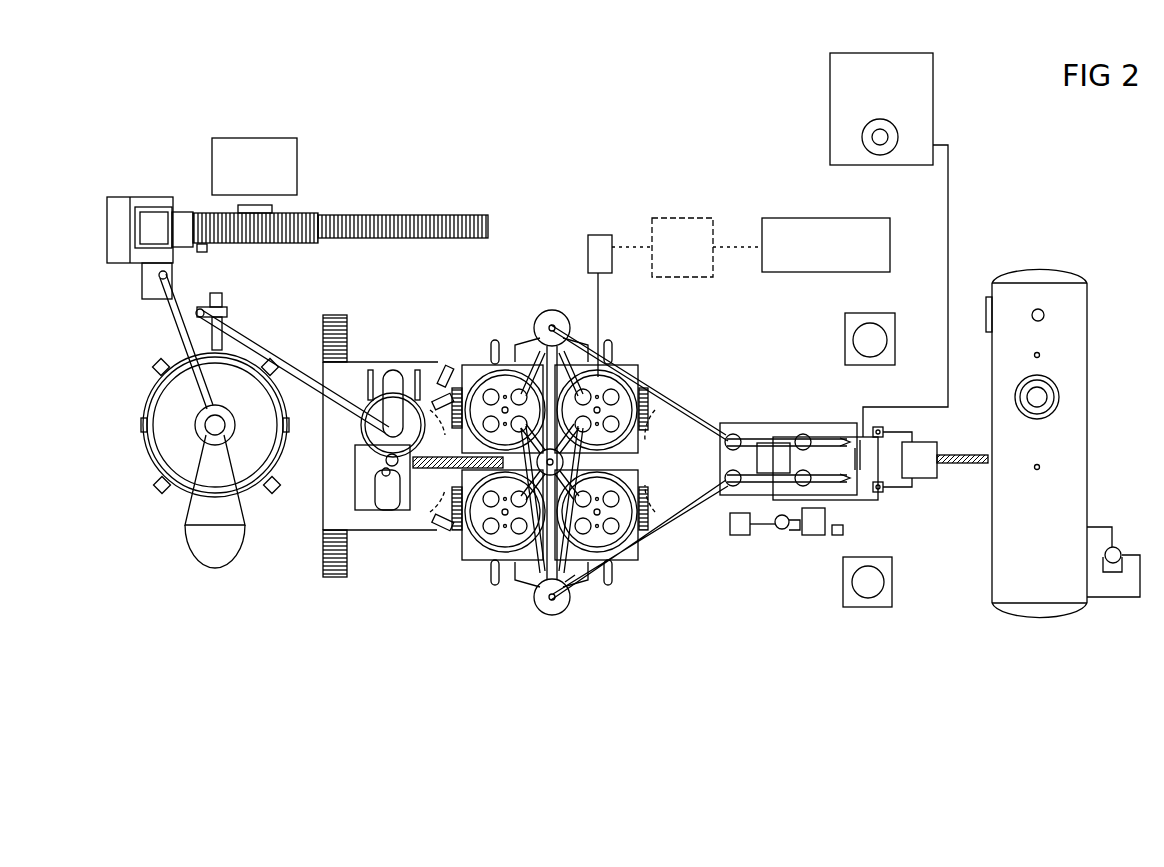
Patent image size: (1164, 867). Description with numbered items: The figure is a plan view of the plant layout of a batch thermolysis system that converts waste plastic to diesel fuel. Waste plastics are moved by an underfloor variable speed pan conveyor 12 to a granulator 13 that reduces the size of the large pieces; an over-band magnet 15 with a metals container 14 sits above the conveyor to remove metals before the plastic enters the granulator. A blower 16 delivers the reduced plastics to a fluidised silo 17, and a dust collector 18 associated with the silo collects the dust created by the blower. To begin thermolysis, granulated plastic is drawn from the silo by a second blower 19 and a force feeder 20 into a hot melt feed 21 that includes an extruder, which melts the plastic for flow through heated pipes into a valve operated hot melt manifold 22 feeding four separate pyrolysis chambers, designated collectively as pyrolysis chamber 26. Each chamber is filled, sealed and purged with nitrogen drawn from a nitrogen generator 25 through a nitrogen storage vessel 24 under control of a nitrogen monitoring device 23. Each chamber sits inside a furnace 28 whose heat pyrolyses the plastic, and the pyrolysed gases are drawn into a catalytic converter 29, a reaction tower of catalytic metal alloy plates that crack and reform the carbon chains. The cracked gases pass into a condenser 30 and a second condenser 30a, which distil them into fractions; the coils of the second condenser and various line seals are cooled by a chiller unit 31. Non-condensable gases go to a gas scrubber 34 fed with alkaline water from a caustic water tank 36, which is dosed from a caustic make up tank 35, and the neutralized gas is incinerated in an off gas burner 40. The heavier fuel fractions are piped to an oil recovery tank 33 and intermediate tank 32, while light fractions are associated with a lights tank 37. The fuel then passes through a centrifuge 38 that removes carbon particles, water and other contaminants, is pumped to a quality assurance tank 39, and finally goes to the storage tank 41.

The conveyor 12 is at (345, 213).
The granulator 13 is at (113, 210).
The metals container 14 is at (258, 170).
The magnet 15 is at (253, 208).
The blower 16 is at (172, 320).
The fluidised silo 17 is at (252, 490).
The dust collector 18 is at (207, 568).
The blower 19 is at (257, 338).
The force feeder 20 is at (422, 532).
The hot melt feed 21 is at (403, 505).
The hot melt manifold 22 is at (572, 580).
The nitrogen monitoring device 23 is at (601, 233).
The nitrogen storage vessel 24 is at (693, 215).
The nitrogen generator 25 is at (783, 240).
The pyrolysis chamber 26 is at (495, 587).
The furnace 28 is at (650, 355).
The catalytic converter 29 is at (553, 615).
The condenser 30 is at (730, 492).
The condenser 30a is at (880, 427).
The chiller unit 31 is at (850, 607).
The intermediate tank 32 is at (815, 450).
The oil recovery tank 33 is at (773, 452).
The gas scrubber 34 is at (782, 530).
The caustic make up tank 35 is at (812, 535).
The caustic water tank 36 is at (740, 535).
The lights tank 37 is at (865, 340).
The centrifuge 38 is at (862, 458).
The quality assurance tank 39 is at (920, 450).
The off gas burner 40 is at (845, 133).
The storage tank 41 is at (1017, 597).